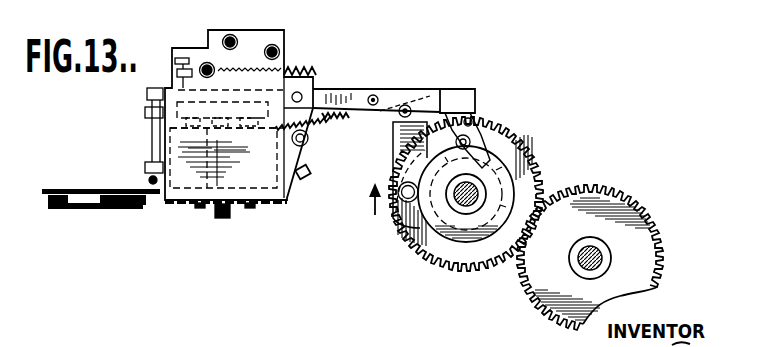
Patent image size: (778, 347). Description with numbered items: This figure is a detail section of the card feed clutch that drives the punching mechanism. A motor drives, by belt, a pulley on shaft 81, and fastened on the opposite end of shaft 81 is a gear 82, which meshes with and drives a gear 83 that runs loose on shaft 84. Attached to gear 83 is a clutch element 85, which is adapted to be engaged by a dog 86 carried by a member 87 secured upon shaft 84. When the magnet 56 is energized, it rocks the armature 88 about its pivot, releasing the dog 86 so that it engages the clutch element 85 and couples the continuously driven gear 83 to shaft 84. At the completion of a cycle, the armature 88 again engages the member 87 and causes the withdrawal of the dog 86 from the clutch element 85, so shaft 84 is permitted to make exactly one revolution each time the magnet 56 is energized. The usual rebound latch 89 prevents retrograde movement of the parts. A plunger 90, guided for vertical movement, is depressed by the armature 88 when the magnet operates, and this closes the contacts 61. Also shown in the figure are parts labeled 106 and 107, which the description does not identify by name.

The magnet 56 is at (207, 210).
The contacts 61 is at (133, 198).
The shaft 81 is at (607, 257).
The gear 82 is at (645, 222).
The gear 83 is at (528, 174).
The shaft 84 is at (461, 198).
The clutch element 85 is at (514, 138).
The dog 86 is at (518, 162).
The member 87 is at (447, 151).
The armature 88 is at (475, 94).
The rebound latch 89 is at (441, 112).
The plunger 90 is at (149, 133).
The block 106 is at (405, 128).
The spring 107 is at (513, 189).